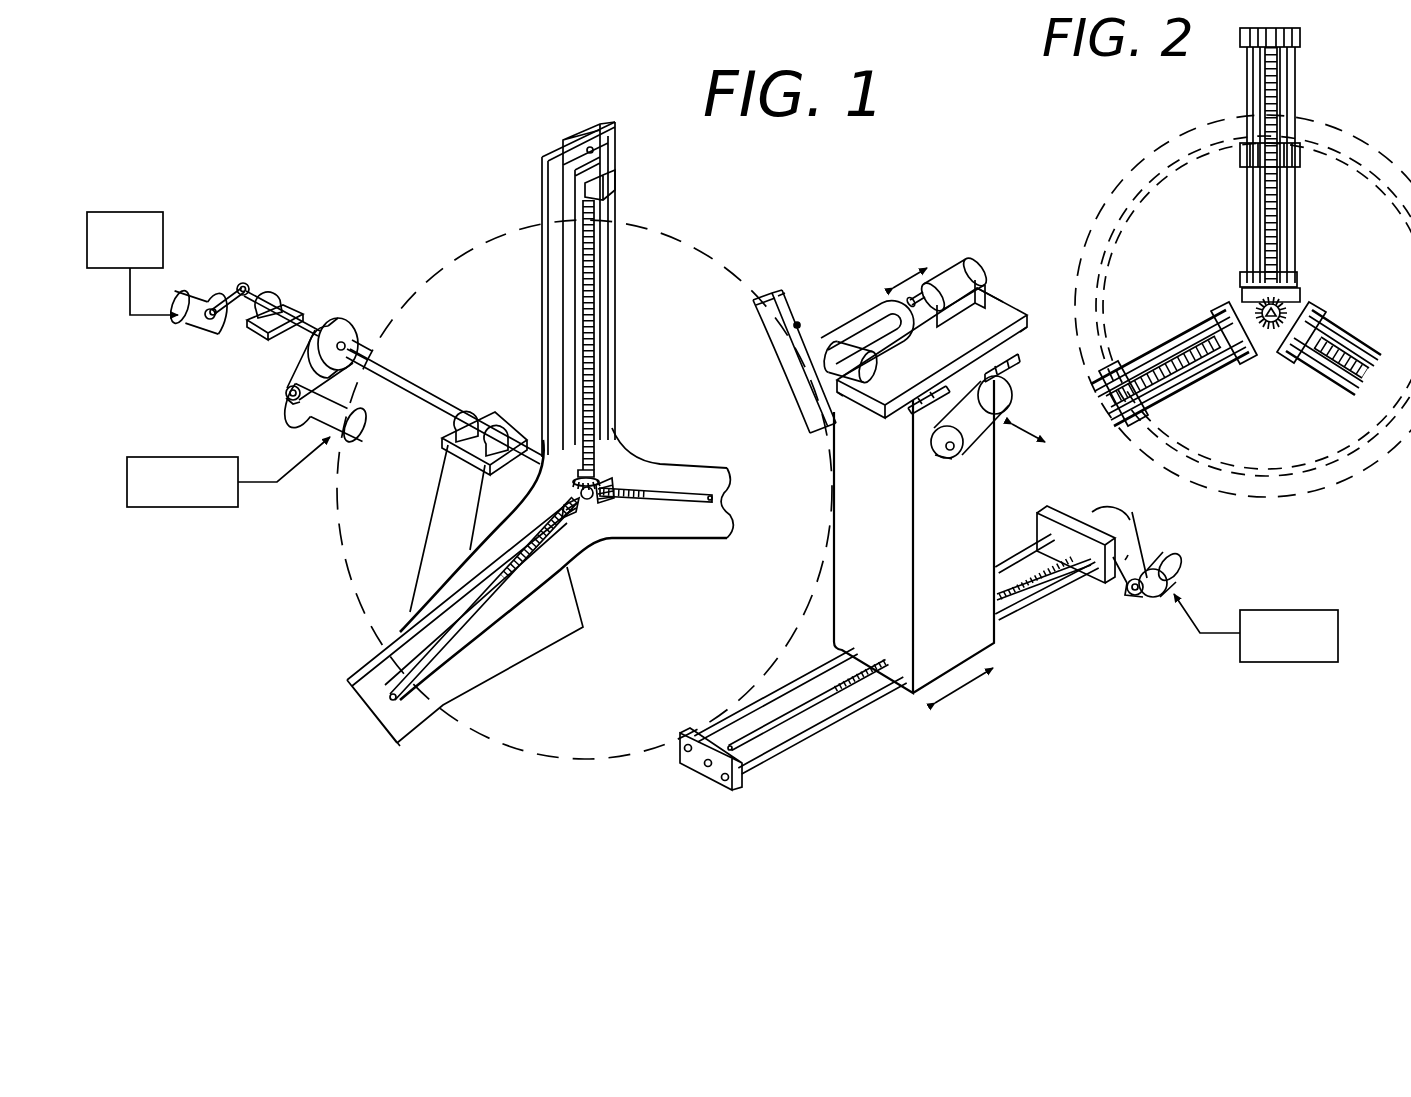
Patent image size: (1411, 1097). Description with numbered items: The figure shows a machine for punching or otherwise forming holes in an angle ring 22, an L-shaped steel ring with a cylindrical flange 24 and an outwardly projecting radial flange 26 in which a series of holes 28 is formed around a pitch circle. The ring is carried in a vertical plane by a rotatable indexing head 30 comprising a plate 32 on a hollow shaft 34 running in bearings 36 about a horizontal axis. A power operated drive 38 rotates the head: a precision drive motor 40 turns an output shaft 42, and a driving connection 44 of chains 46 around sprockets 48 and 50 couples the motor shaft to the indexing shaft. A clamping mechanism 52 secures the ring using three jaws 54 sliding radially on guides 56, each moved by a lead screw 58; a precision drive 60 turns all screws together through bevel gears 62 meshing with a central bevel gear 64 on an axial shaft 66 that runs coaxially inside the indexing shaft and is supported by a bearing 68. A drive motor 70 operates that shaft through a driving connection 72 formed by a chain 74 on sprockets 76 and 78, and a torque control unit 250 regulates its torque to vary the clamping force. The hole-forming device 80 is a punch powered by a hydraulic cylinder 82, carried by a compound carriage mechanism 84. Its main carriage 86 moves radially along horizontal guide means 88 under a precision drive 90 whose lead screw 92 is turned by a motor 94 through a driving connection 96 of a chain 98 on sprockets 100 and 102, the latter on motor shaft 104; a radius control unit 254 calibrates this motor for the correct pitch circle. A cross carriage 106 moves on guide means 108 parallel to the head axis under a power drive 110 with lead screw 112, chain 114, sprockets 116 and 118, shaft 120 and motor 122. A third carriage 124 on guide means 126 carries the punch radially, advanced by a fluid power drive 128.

In FIG. 1, the angle ring 22 is at (772, 332).
In FIG. 2, the angle ring 22 is at (1148, 157).
In FIG. 1, the cylindrical flange 24 is at (775, 300).
In FIG. 1, the radial flange 26 is at (786, 300).
In FIG. 1, the holes 28 is at (812, 360).
In FIG. 1, the indexing head 30 is at (545, 148).
In FIG. 1, the plate 32 is at (612, 120).
In FIG. 1, the shaft 34 is at (420, 388).
In FIG. 1, the bearings 36 is at (494, 428).
In FIG. 1, the power operated drive 38 is at (330, 452).
In FIG. 1, the drive motor 40 is at (312, 413).
In FIG. 1, the output shaft 42 is at (300, 403).
In FIG. 1, the driving connection 44 is at (286, 362).
In FIG. 1, the chains 46 is at (312, 341).
In FIG. 1, the sprocket 48 is at (353, 335).
In FIG. 1, the sprocket 50 is at (286, 390).
In FIG. 1, the clamping mechanism 52 is at (624, 183).
In FIG. 1, the jaws 54 is at (606, 195).
In FIG. 2, the jaws 54 is at (1292, 165).
In FIG. 1, the guides 56 is at (610, 243).
In FIG. 2, the guides 56 is at (1252, 90).
In FIG. 1, the lead screw 58 is at (594, 288).
In FIG. 2, the lead screw 58 is at (1276, 72).
In FIG. 1, the precision drive 60 is at (604, 478).
In FIG. 1, the bevel gears 62 is at (575, 488).
In FIG. 2, the bevel gears 62 is at (1240, 300).
In FIG. 1, the bevel gear 64 is at (565, 500).
In FIG. 2, the bevel gear 64 is at (1268, 330).
In FIG. 1, the axial shaft 66 is at (310, 325).
In FIG. 1, the bearing 68 is at (274, 300).
In FIG. 1, the drive motor 70 is at (182, 292).
In FIG. 1, the driving connection 72 is at (222, 292).
In FIG. 1, the chain 74 is at (212, 305).
In FIG. 1, the sprocket 76 is at (247, 284).
In FIG. 1, the sprocket 78 is at (212, 320).
In FIG. 1, the hole-forming device 80 is at (853, 305).
In FIG. 1, the hydraulic cylinder 82 is at (830, 378).
In FIG. 1, the compound carriage mechanism 84 is at (990, 285).
In FIG. 1, the main carriage 86 is at (998, 528).
In FIG. 1, the guide means 88 is at (1012, 566).
In FIG. 1, the precision drive 90 is at (1183, 558).
In FIG. 1, the lead screw 92 is at (1060, 598).
In FIG. 1, the motor 94 is at (1181, 575).
In FIG. 1, the driving connection 96 is at (1141, 548).
In FIG. 1, the chain 98 is at (1128, 590).
In FIG. 1, the sprocket 100 is at (1098, 520).
In FIG. 1, the sprocket 102 is at (1134, 596).
In FIG. 1, the shaft 104 is at (1148, 600).
In FIG. 1, the cross carriage 106 is at (1014, 330).
In FIG. 1, the guide means 108 is at (1003, 293).
In FIG. 1, the power drive 110 is at (940, 468).
In FIG. 1, the lead screw 112 is at (1013, 396).
In FIG. 1, the chain 114 is at (1029, 447).
In FIG. 1, the sprocket 116 is at (1006, 412).
In FIG. 1, the sprocket 118 is at (950, 460).
In FIG. 1, the shaft 120 is at (945, 448).
In FIG. 1, the motor 122 is at (945, 430).
In FIG. 1, the third carriage 124 is at (862, 385).
In FIG. 1, the guide means 126 is at (960, 318).
In FIG. 1, the power drive 128 is at (958, 262).
In FIG. 1, the torque control unit 250 is at (112, 212).
In FIG. 1, the radius control unit 254 is at (1295, 663).